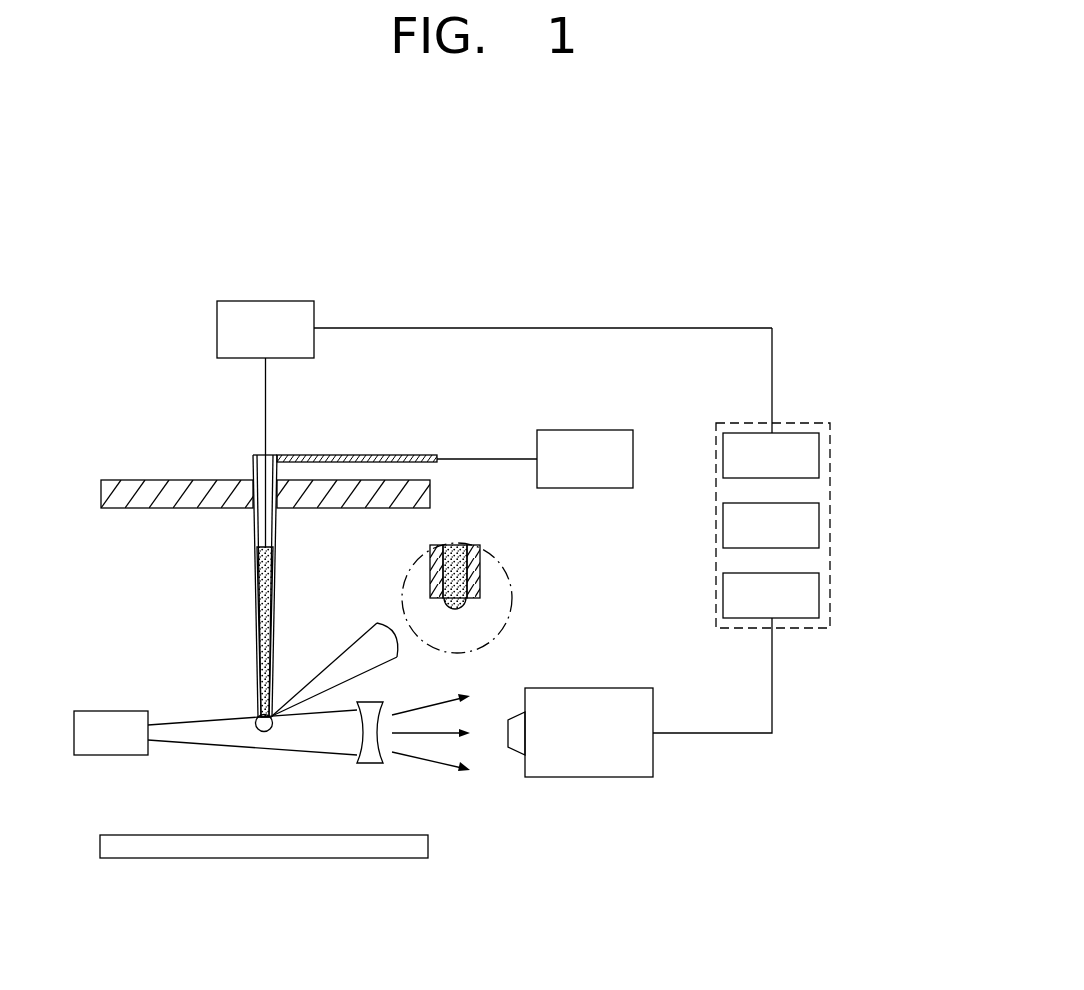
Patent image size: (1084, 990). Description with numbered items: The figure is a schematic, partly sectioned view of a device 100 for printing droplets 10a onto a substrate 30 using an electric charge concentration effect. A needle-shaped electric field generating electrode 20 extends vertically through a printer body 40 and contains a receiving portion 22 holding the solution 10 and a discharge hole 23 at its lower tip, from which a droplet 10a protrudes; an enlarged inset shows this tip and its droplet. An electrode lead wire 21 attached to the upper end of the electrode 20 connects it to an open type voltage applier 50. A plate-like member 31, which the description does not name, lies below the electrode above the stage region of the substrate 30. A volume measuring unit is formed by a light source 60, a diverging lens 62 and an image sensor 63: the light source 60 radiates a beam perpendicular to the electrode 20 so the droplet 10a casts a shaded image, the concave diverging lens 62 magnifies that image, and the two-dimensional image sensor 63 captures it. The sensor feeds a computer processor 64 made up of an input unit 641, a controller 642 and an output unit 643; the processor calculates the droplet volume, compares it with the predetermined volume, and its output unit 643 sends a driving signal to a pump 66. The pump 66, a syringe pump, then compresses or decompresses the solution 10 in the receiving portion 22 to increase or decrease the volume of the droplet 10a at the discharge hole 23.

The device for printing droplets 100 is at (648, 878).
The solution 10 is at (256, 578).
The droplet 10a is at (448, 609).
The electric field generating electrode 20 is at (277, 586).
The electrode lead wire 21 is at (392, 455).
The receiving portion 22 is at (256, 523).
The discharge hole 23 is at (462, 601).
The substrate 30 is at (277, 850).
The substrate / stage plate 31 is at (205, 835).
The printer body 40 is at (135, 480).
The open type voltage applier 50 is at (605, 430).
The light source 60 is at (124, 711).
The diverging lens 62 is at (372, 765).
The image sensor 63 is at (622, 700).
The computer processor 64 is at (804, 530).
The input unit 641 is at (813, 595).
The controller 642 is at (819, 528).
The output unit 643 is at (819, 456).
The pump 66 is at (298, 301).